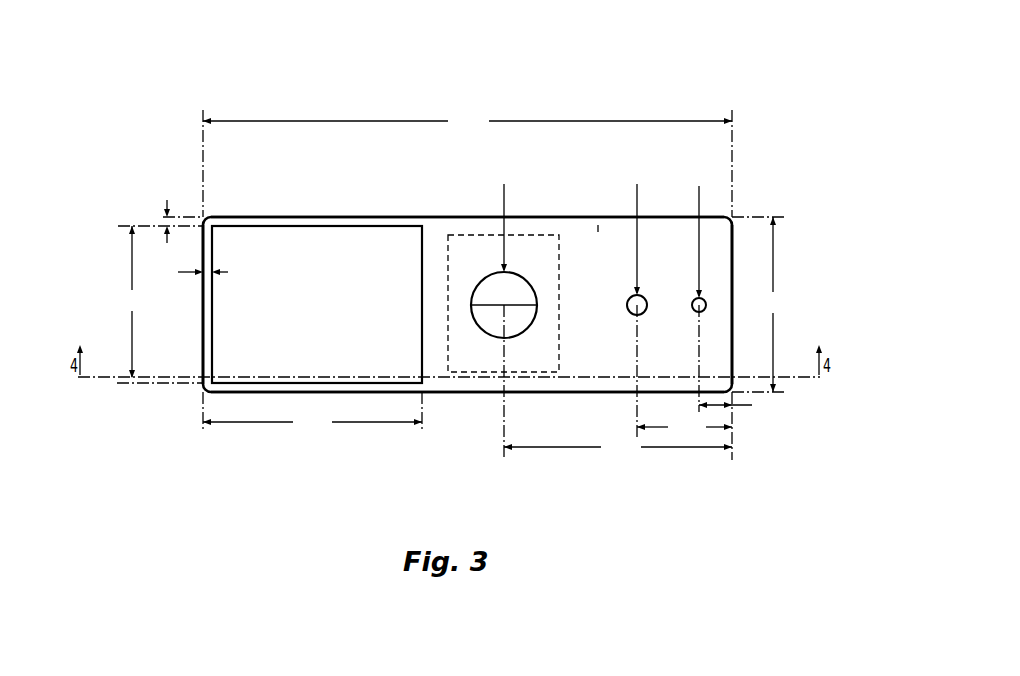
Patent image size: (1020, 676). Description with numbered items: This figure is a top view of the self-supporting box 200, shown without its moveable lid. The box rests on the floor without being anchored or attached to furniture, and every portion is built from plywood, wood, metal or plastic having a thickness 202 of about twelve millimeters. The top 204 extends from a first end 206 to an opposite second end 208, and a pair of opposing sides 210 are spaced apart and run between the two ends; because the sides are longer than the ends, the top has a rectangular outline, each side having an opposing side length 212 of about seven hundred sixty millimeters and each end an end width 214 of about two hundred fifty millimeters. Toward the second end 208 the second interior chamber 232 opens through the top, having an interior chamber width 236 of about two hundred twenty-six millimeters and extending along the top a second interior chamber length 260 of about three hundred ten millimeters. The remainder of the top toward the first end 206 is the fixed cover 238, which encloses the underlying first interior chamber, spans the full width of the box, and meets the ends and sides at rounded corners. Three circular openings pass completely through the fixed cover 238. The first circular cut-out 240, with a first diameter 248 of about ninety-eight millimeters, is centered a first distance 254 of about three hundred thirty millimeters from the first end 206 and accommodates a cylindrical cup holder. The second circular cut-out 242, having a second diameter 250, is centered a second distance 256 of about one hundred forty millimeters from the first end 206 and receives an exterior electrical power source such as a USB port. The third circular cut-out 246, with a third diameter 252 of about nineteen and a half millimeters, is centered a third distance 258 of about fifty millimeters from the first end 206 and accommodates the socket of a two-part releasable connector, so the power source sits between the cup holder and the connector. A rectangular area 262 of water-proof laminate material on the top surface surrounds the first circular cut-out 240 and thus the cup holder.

The self-supporting box 200 is at (192, 61).
The thickness 202 is at (166, 207).
The top 204 is at (352, 226).
The first end 206 is at (733, 234).
The second end 208 is at (203, 347).
The opposing sides 210 is at (274, 217).
The opposing side length 212 is at (330, 120).
The end width 214 is at (773, 263).
The second interior chamber 232 is at (316, 238).
The interior chamber width 236 is at (131, 252).
The fixed cover 238 is at (598, 228).
The first circular cut-out 240 is at (481, 329).
The second circular cut-out 242 is at (630, 313).
The third circular cut-out 246 is at (693, 311).
The first diameter 248 is at (504, 205).
The second diameter 250 is at (637, 240).
The third diameter 252 is at (699, 265).
The first distance 254 is at (550, 449).
The second distance 256 is at (655, 429).
The third distance 258 is at (740, 408).
The second interior chamber length 260 is at (368, 424).
The rectangular area 262 is at (559, 288).